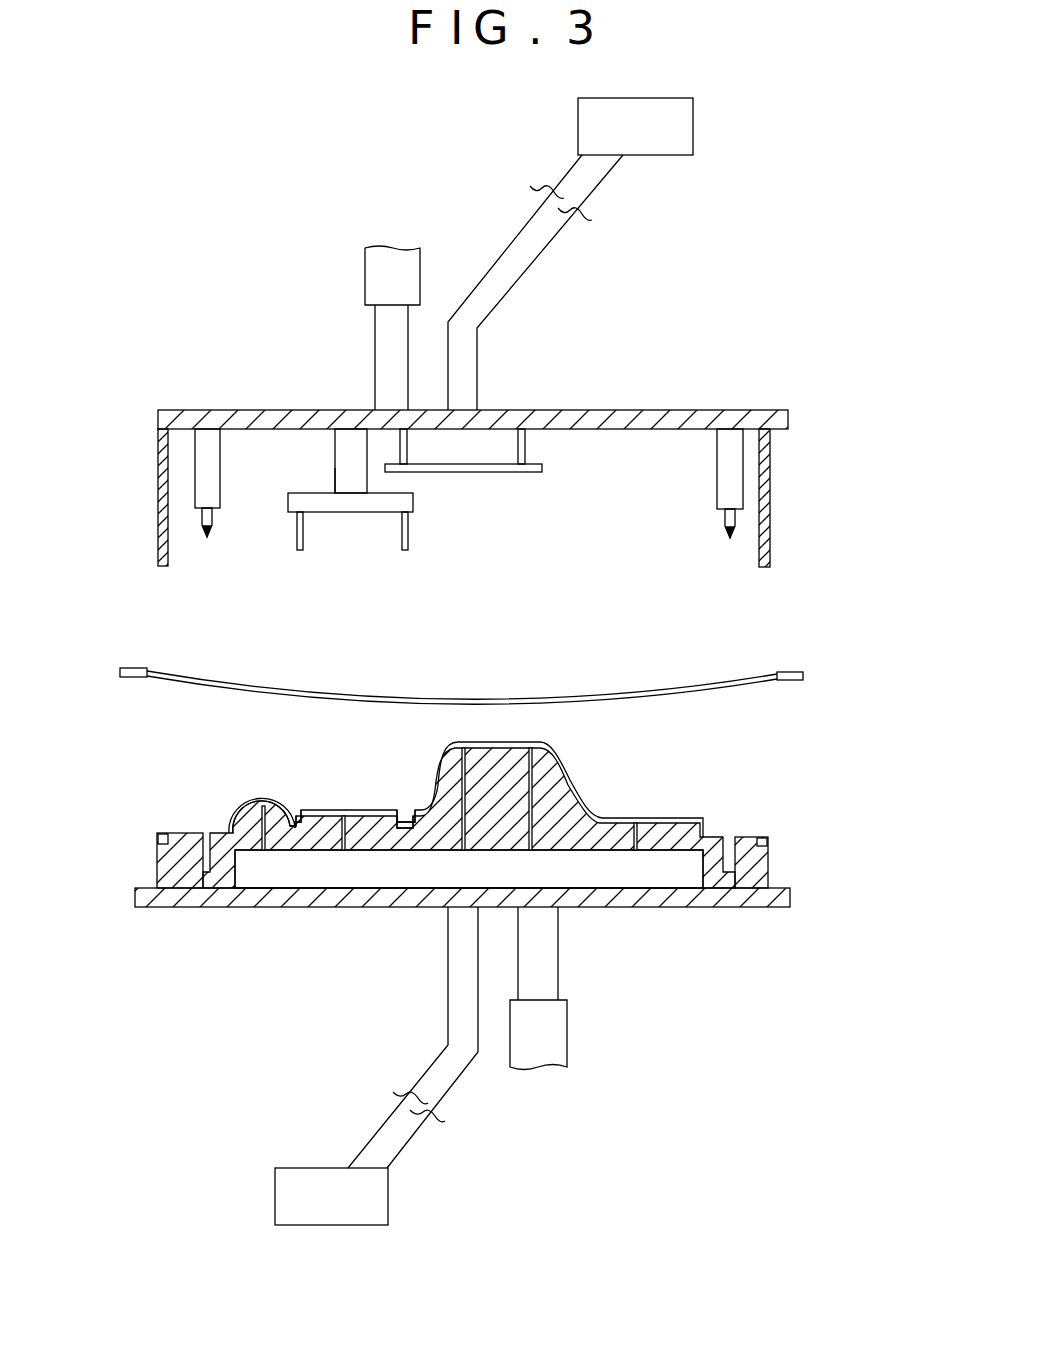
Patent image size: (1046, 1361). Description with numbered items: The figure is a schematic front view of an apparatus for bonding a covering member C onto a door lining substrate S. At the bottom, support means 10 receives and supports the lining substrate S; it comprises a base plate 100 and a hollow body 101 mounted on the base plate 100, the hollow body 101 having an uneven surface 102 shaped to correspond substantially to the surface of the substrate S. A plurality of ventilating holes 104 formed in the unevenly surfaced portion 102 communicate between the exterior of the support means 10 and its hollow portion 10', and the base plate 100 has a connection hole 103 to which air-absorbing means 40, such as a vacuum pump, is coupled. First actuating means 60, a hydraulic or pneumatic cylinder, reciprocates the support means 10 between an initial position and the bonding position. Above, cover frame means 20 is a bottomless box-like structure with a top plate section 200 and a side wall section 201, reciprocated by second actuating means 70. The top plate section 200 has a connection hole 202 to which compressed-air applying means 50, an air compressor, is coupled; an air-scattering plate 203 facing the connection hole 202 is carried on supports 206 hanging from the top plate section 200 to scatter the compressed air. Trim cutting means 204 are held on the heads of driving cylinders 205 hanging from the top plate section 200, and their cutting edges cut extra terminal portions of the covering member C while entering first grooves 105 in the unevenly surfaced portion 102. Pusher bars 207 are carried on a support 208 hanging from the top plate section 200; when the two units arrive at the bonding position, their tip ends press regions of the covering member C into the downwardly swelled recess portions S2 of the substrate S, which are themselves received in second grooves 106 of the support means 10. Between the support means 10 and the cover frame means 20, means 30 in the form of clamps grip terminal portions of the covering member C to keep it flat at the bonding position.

The support means 10 is at (450, 949).
The hollow portion 10' is at (479, 919).
The cover frame means 20 is at (568, 405).
The covering member supporting means 30 is at (130, 668).
The air-absorbing means 40 is at (275, 1198).
The compressed-air applying means 50 is at (692, 118).
The first actuating means 60 is at (560, 1015).
The second actuating means 70 is at (365, 283).
The base plate 100 is at (160, 907).
The hollow body 101 is at (613, 858).
The uneven surface 102 is at (223, 830).
The connection hole 103 is at (456, 910).
The ventilating holes 104 is at (343, 850).
The first grooves 105 is at (731, 835).
The second grooves 106 is at (292, 822).
The top plate section 200 is at (323, 410).
The side wall section 201 is at (158, 447).
The connection hole 202 is at (507, 455).
The air-scattering plate 203 is at (468, 475).
The trim cutting means 204 is at (212, 517).
The driving cylinders 205 is at (196, 477).
The supports 206 is at (399, 456).
The pusher bars 207 is at (403, 522).
The support 208 is at (335, 468).
The covering member C is at (474, 695).
The lining substrate S is at (571, 787).
The downwardly swelled recess portions S2 is at (402, 816).